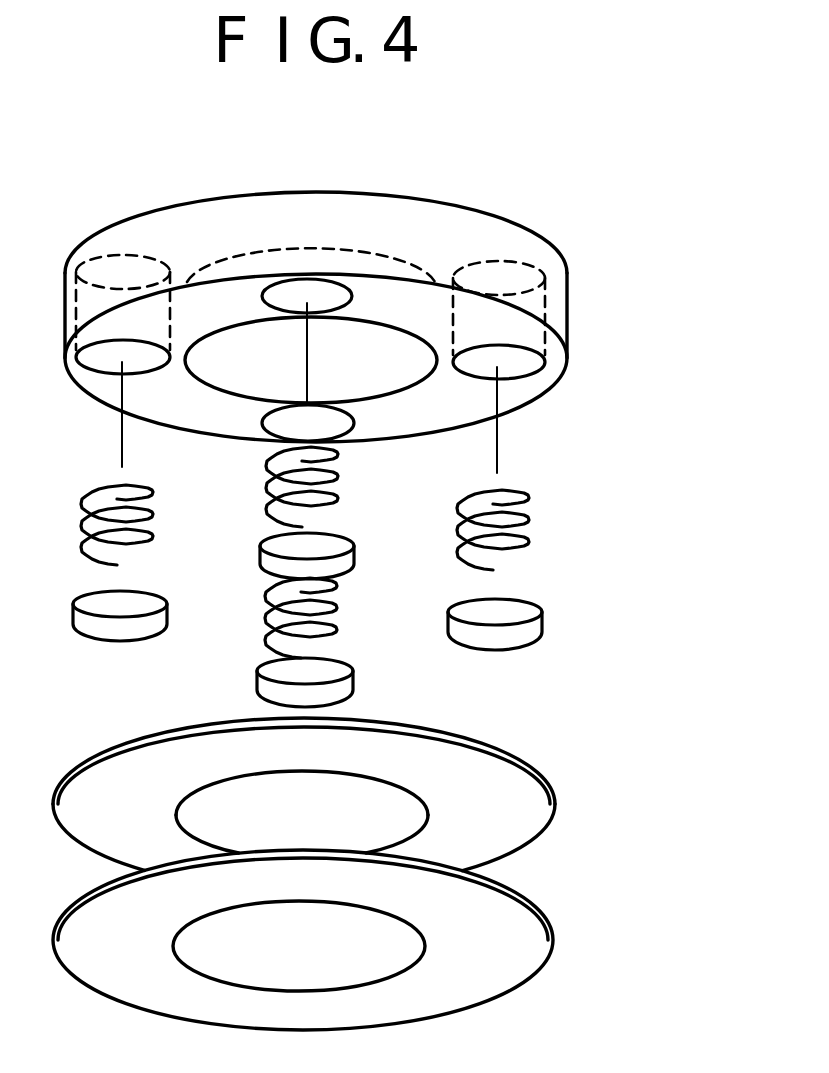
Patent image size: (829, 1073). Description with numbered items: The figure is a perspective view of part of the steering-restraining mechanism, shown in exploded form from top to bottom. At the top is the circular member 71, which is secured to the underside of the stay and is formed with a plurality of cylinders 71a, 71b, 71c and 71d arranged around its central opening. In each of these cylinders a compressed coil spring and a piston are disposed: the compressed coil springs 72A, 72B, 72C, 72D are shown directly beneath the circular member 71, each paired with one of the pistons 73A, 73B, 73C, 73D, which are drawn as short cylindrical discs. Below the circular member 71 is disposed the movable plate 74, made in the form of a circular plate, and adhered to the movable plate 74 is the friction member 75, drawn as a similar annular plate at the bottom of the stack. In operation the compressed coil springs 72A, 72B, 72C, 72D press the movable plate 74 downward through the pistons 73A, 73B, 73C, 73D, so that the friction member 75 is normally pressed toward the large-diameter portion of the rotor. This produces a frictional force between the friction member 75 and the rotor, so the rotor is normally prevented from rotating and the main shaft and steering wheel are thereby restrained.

The circular member 71 is at (567, 313).
The cylinder 71a is at (540, 378).
The cylinder 71b is at (340, 429).
The cylinder 71c is at (93, 361).
The cylinder 71d is at (292, 288).
The compressed coil spring 72A is at (527, 541).
The compressed coil spring 72B is at (330, 633).
The compressed coil spring 72C is at (82, 540).
The compressed coil spring 72D is at (275, 515).
The piston 73A is at (543, 622).
The piston 73B is at (352, 683).
The piston 73C is at (75, 623).
The piston 73D is at (260, 552).
The movable plate 74 is at (540, 800).
The friction member 75 is at (537, 930).